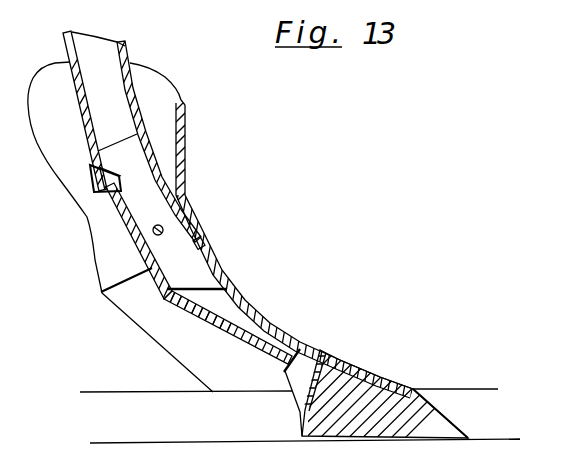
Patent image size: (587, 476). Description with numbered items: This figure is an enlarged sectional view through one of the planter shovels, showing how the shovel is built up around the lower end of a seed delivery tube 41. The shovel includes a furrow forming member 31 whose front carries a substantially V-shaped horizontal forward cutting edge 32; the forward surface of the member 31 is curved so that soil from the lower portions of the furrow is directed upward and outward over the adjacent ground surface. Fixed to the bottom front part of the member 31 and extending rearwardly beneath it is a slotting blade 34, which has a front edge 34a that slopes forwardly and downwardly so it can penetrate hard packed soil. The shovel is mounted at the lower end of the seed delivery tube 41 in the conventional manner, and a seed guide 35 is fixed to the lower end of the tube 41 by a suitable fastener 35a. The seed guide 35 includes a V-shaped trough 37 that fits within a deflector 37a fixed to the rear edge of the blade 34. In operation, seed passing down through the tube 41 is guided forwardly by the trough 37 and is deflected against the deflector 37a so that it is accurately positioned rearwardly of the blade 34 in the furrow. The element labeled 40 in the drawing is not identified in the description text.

The furrow forming member 31 is at (264, 304).
The forward cutting edge 32 is at (223, 393).
The slotting blade 34 is at (427, 421).
The front edge 34a is at (452, 428).
The seed guide 35 is at (140, 249).
The fastener 35a is at (90, 178).
The V-shaped trough 37 is at (257, 337).
The deflector 37a is at (293, 377).
The fastener 40 is at (197, 247).
The seed delivery tube 41 is at (140, 131).